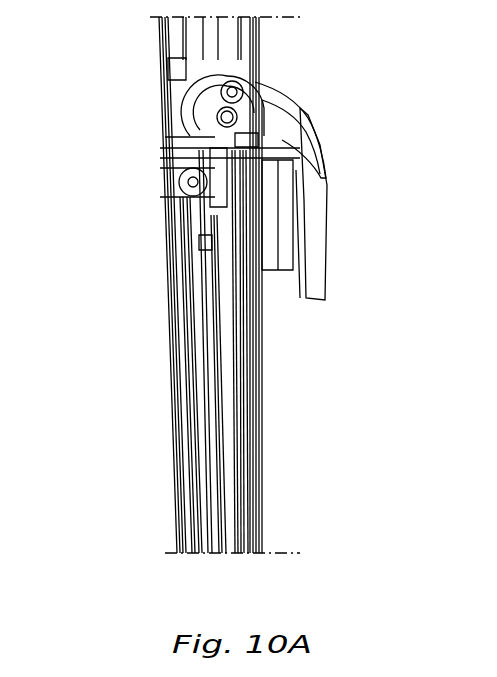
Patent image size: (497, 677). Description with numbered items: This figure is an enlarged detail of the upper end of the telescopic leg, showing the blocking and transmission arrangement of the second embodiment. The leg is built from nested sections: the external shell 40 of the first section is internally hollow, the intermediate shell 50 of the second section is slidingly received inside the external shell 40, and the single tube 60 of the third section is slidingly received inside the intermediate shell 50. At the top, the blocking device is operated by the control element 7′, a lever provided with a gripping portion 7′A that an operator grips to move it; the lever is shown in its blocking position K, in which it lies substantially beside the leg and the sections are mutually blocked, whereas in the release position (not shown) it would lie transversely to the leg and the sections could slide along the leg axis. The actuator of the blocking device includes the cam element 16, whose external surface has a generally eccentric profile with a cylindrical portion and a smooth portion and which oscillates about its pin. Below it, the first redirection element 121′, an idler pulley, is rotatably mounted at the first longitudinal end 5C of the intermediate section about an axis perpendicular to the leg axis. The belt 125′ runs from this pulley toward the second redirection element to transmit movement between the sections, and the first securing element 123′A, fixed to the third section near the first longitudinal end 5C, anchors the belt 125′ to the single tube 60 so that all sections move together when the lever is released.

The cam element 16 is at (185, 127).
The first longitudinal end 5C is at (153, 176).
The first redirection element 121′ is at (165, 198).
The first securing element 123′A is at (207, 268).
The belt 125′ is at (182, 410).
The external shell 40 is at (262, 459).
The intermediate shell 50 is at (249, 513).
The single tube 60 is at (229, 545).
The control element 7′ is at (325, 178).
The gripping portion 7′A is at (342, 253).
The blocking position K is at (398, 195).